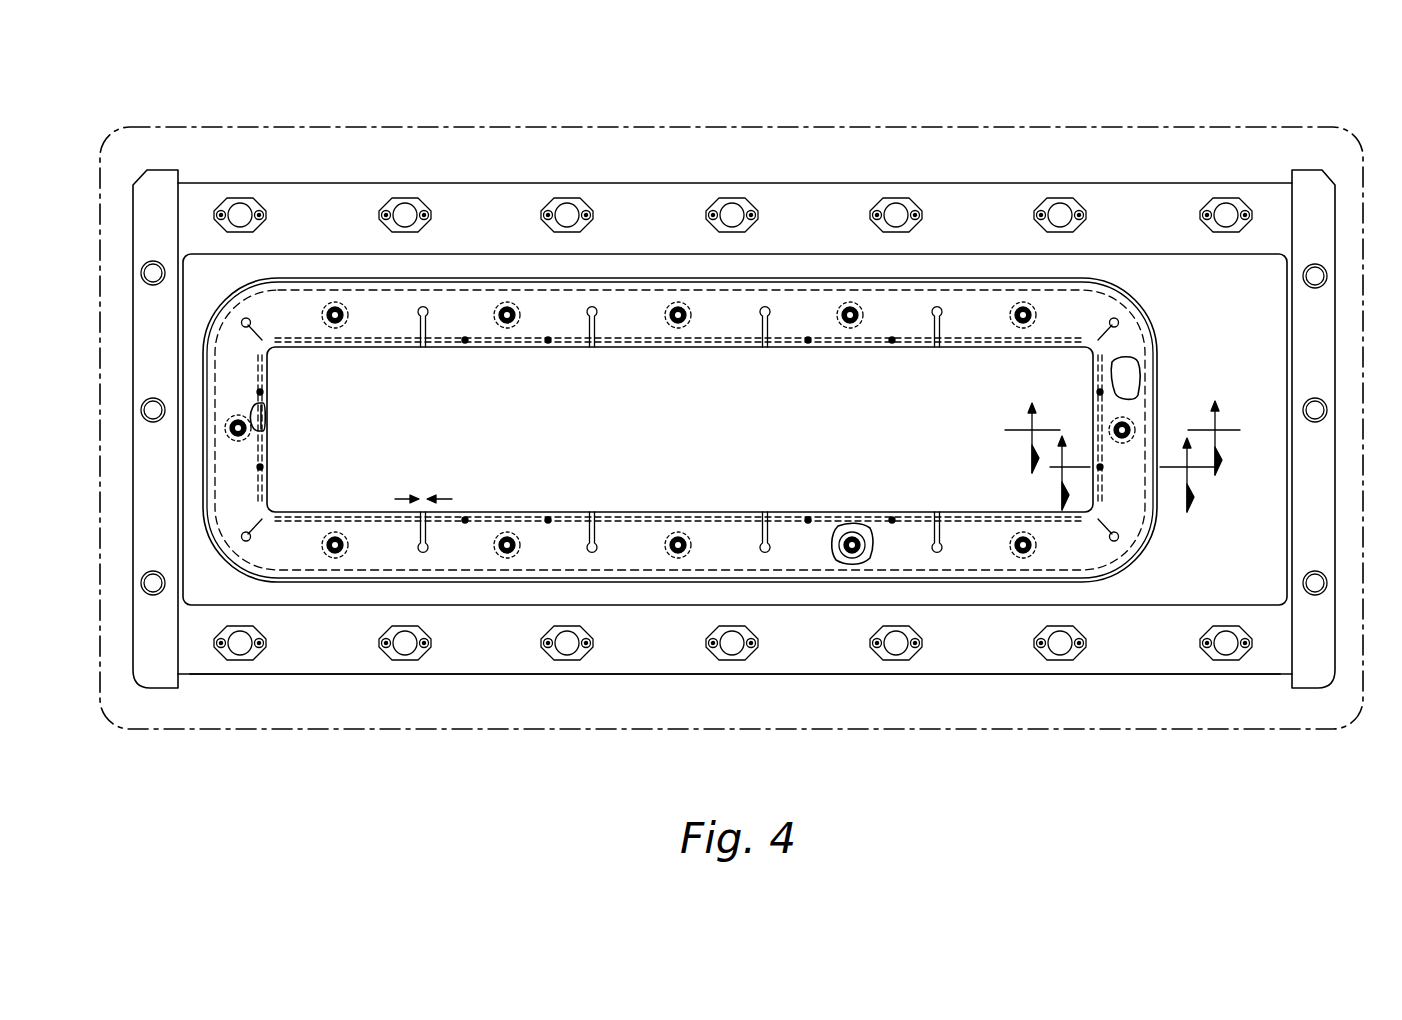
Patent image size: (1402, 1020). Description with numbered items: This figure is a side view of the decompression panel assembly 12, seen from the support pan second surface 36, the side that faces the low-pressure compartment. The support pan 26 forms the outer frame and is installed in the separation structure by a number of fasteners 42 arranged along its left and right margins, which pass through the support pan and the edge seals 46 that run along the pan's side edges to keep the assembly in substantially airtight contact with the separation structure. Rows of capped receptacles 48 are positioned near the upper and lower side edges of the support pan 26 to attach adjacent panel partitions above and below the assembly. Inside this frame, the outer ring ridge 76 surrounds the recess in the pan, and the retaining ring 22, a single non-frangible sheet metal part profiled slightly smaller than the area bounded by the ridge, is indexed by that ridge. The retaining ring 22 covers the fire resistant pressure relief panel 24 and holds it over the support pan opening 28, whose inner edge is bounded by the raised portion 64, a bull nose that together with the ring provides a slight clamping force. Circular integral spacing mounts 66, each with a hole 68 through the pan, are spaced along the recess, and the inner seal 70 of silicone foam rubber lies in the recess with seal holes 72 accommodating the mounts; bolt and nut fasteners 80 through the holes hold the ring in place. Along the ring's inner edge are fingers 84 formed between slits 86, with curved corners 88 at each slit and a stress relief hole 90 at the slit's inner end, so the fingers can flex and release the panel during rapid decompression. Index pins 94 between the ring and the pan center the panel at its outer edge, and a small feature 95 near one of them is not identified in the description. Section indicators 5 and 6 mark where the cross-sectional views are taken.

The decompression panel assembly 12 is at (497, 106).
The retaining ring 22 is at (1094, 563).
The pressure relief panel 24 is at (733, 428).
The support pan 26 is at (1218, 182).
The opening 28 is at (264, 425).
The support pan second surface 36 is at (330, 660).
The fasteners 42 is at (142, 272).
The edge seals 46 is at (143, 672).
The capped receptacles 48 is at (237, 196).
The raised portion 64 is at (262, 410).
The integral spacing mounts 66 is at (856, 527).
The hole 68 is at (847, 530).
The inner seal 70 is at (1112, 368).
The seal holes 72 is at (688, 322).
The outer ring ridge 76 is at (978, 278).
The fasteners 80 is at (510, 533).
The fingers 84 is at (350, 512).
The slits 86 is at (450, 497).
The curved corners 88 is at (423, 347).
The stress relief holes 90 is at (600, 546).
The index pins 94 is at (805, 517).
The stud 95 is at (548, 518).
The section line 5 is at (1122, 438).
The section line 6 is at (1127, 474).